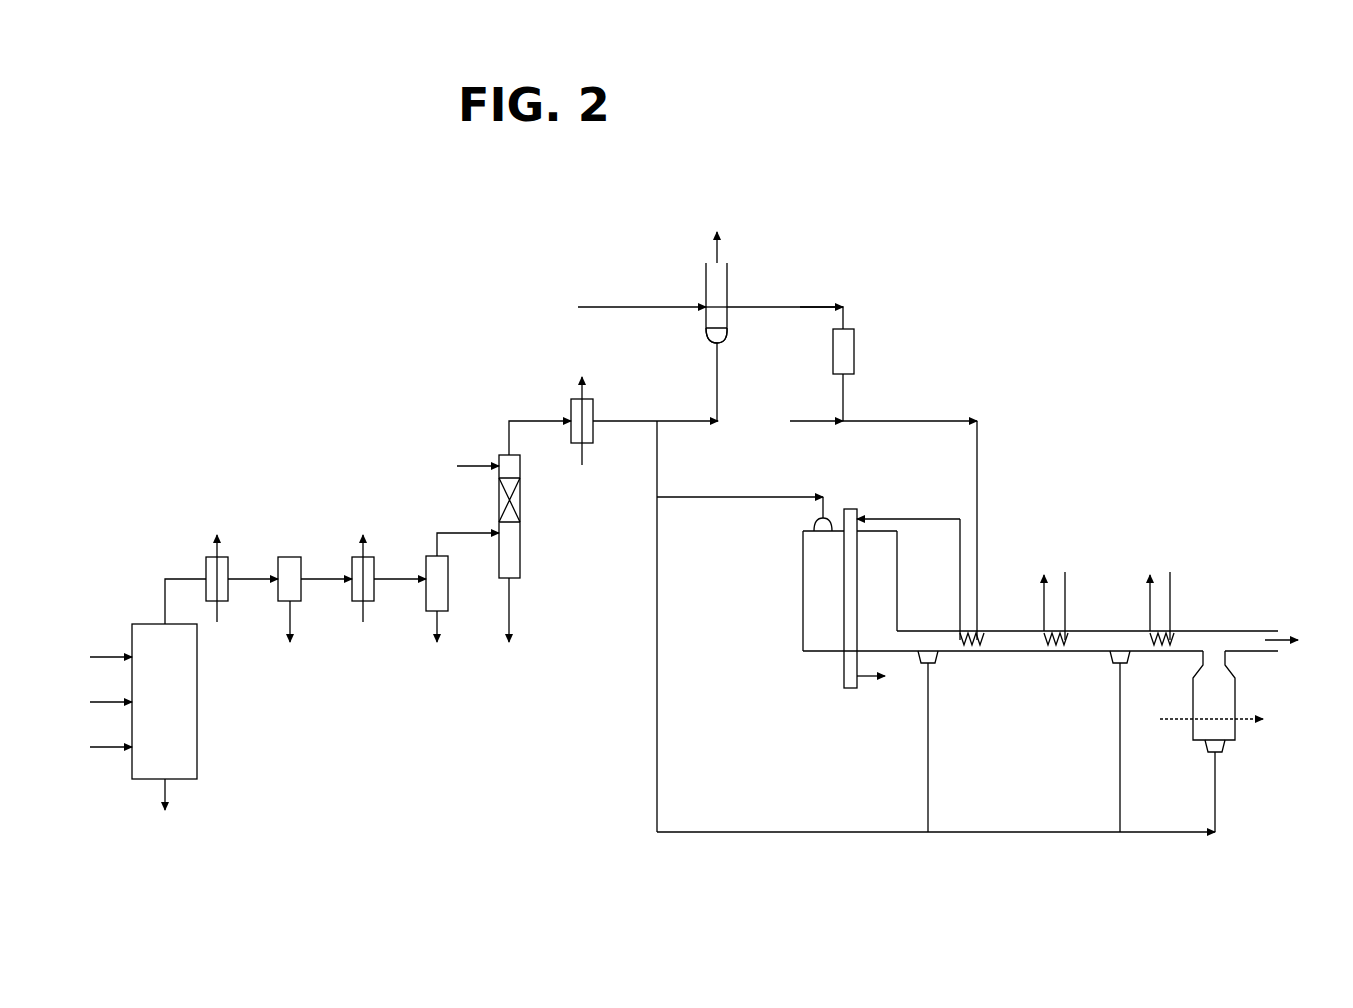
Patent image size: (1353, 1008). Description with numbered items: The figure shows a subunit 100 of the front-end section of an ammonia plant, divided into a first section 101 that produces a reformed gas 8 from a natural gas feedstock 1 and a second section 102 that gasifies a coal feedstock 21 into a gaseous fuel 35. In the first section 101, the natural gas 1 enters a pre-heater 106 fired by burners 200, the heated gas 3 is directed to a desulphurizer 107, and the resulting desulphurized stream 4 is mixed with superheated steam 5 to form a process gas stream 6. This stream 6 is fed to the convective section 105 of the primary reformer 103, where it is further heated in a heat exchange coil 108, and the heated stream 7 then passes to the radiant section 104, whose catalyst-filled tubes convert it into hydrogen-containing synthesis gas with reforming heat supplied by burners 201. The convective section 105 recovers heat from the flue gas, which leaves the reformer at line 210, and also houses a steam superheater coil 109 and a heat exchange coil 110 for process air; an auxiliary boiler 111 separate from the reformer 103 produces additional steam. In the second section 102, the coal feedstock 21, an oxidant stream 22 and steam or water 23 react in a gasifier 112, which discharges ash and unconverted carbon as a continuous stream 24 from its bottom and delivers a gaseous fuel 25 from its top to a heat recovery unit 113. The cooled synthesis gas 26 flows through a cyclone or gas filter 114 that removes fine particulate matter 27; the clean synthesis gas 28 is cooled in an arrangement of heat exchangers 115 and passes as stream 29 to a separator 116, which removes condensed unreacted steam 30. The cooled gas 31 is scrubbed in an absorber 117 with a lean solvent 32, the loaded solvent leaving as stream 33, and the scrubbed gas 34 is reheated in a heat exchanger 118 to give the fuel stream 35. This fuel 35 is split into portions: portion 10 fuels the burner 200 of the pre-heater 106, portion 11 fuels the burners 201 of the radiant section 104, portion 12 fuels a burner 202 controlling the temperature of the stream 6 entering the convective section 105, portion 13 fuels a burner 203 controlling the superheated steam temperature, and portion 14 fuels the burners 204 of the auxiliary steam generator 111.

The natural gas feedstock 1 is at (646, 307).
The gas stream from cyclone 3 is at (806, 311).
The stream of desulphurized natural gas 4 is at (845, 385).
The superheated steam 5 is at (874, 423).
The stream of process gas 6 is at (945, 421).
The heated stream 7 is at (940, 519).
The reformed gas 8 is at (878, 676).
The fuel portion 10 is at (663, 425).
The fuel portion 11 is at (757, 495).
The fuel portion 12 is at (929, 806).
The fuel portion 13 is at (1121, 806).
The fuel portion 14 is at (1216, 800).
The coal feedstock 21 is at (96, 657).
The oxidant stream 22 is at (96, 702).
The steam or water 23 is at (96, 747).
The stream of ash and unconverted carbon 24 is at (167, 810).
The gaseous fuel 25 is at (190, 585).
The cooled synthesis gas 26 is at (257, 585).
The fine particulate matter 27 is at (294, 636).
The clean synthesis gas 28 is at (337, 585).
The stream from heat exchanger 115 29 is at (407, 585).
The condensed unreacted steam 30 is at (439, 641).
The cooled gas 31 is at (462, 535).
The lean solvent 32 is at (466, 466).
The loaded solvent stream 33 is at (514, 625).
The scrubbed gas 34 is at (522, 427).
The heated stream 35 is at (612, 427).
The subunit 100 is at (1040, 250).
The first section 101 is at (863, 250).
The second section 102 is at (252, 474).
The primary reformer 103 is at (1063, 518).
The radiant section 104 is at (836, 712).
The convective section 105 is at (1040, 718).
The pre-heater 106 is at (727, 275).
The desulphurizer 107 is at (854, 355).
The heat exchange coil 108 is at (975, 633).
The steam superheater coil 109 is at (1060, 630).
The heat exchange coil for process air 110 is at (1168, 631).
The auxiliary boiler 111 is at (1235, 707).
The gasifier 112 is at (197, 735).
The heat recovery unit 113 is at (228, 562).
The cyclone or gas filter 114 is at (301, 562).
The arrangement of heat exchangers 115 is at (374, 562).
The separator 116 is at (448, 598).
The hydrogen sulphide absorber 117 is at (520, 545).
The heat exchanger 118 is at (571, 405).
The burners of the desulphurizer preheater 200 is at (722, 345).
The burners of the radiant section 201 is at (815, 525).
The burner of the convective section 202 is at (935, 665).
The burner of the convective section 203 is at (1109, 654).
The burners of the auxiliary steam generator 204 is at (1225, 752).
The flue gas line 210 is at (1305, 640).